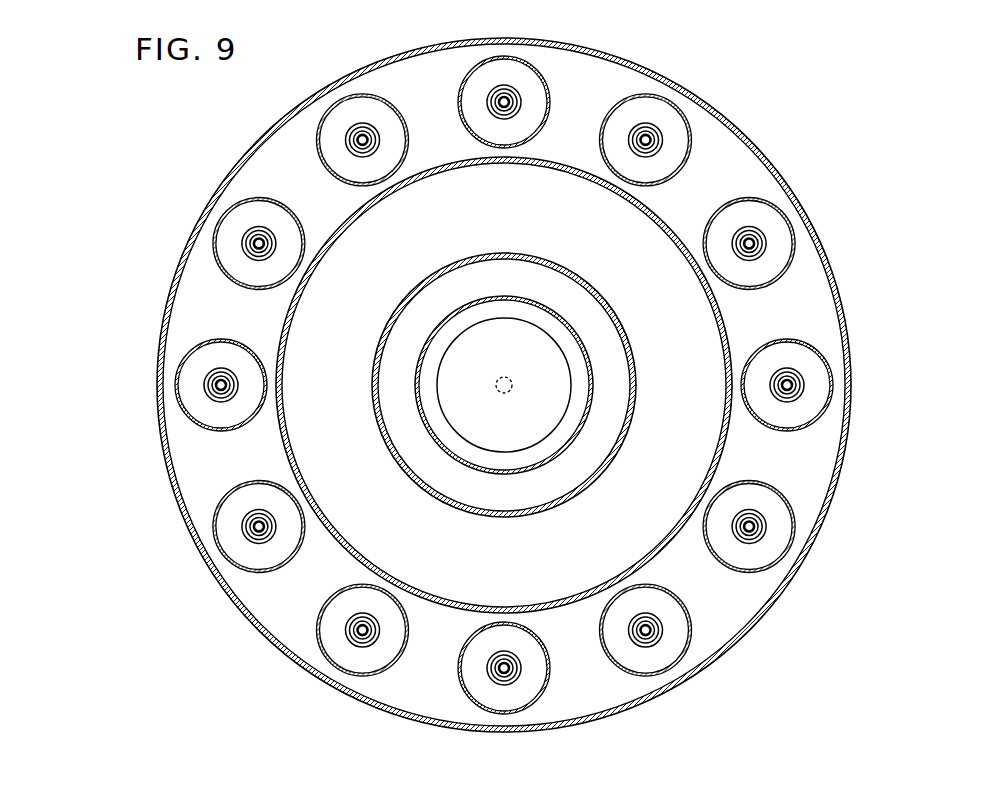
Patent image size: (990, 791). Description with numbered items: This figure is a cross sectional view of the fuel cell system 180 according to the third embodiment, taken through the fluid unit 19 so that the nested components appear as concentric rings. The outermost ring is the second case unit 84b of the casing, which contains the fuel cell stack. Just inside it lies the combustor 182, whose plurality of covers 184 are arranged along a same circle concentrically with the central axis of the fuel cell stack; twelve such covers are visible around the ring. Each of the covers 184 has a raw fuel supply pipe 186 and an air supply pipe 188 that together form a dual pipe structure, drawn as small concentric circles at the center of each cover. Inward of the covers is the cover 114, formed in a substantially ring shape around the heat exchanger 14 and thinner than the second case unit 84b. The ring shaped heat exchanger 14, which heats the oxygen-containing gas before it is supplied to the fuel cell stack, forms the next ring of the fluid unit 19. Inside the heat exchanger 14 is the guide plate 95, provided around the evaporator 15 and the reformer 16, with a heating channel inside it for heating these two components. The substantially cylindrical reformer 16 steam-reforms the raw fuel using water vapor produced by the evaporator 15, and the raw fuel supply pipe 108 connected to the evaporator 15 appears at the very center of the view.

The fuel cell system 180 is at (229, 127).
The combustor 182 is at (643, 80).
The covers 184 is at (548, 96).
The raw fuel supply pipe 186 is at (492, 111).
The air supply pipe 188 is at (488, 97).
The cover 114 is at (563, 165).
The second case unit 84b is at (733, 127).
The heat exchanger 14 is at (735, 330).
The reformer 16 is at (548, 395).
The evaporator 15 is at (504, 385).
The fluid unit 19 is at (944, 313).
The guide plate 95 is at (583, 342).
The raw fuel supply pipe 108 is at (505, 394).